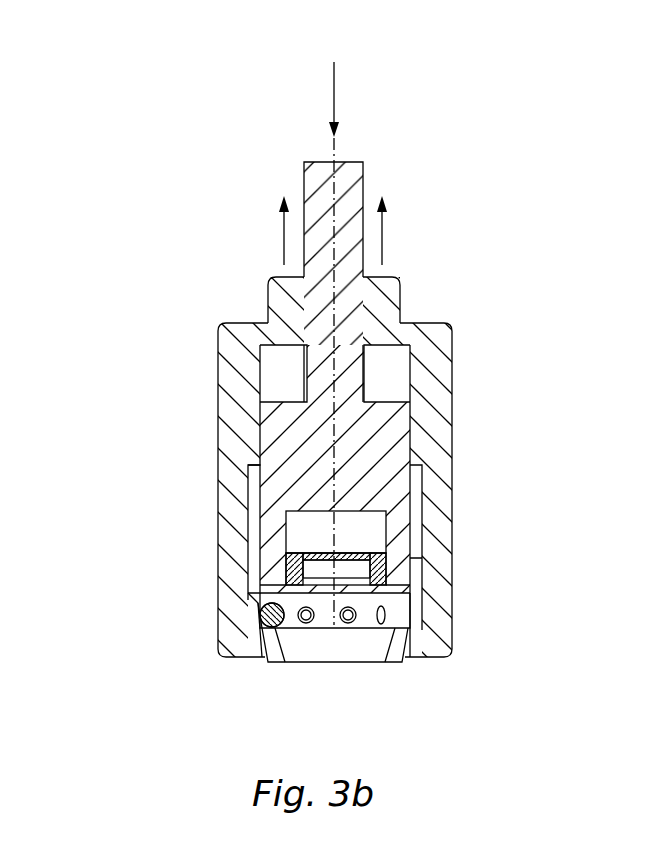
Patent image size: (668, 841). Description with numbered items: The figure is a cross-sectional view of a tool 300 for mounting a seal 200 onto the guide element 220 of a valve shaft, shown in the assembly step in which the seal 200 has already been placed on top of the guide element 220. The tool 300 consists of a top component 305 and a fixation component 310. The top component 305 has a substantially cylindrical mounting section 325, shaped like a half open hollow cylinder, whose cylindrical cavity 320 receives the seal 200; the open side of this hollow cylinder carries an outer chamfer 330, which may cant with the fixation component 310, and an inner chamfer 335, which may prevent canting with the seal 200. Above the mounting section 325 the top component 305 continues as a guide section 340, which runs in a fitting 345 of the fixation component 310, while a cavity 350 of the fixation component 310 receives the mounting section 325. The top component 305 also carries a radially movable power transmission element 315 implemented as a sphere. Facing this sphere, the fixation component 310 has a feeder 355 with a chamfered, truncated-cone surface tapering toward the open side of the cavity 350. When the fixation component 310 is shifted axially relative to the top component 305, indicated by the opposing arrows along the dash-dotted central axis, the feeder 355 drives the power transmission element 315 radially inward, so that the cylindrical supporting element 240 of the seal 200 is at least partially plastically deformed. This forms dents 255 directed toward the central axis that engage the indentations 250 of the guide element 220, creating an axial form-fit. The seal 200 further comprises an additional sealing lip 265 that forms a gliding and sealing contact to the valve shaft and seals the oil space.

The tool 300 is at (136, 124).
The top component 305 is at (363, 183).
The guide section 340 is at (353, 252).
The fitting 345 is at (387, 307).
The cavity 350 is at (277, 368).
The mounting section 325 is at (385, 445).
The fixation component 310 is at (452, 432).
The additional sealing lip 265 is at (243, 492).
The feeder 355 is at (260, 600).
The power transmission element 315 is at (257, 605).
The cylindrical cavity 320 is at (356, 528).
The seal 200 is at (357, 556).
The guide element 220 is at (387, 593).
The supporting element 240 is at (387, 589).
The dents 255 is at (285, 658).
The indentations 250 is at (347, 628).
The inner chamfer 335 is at (388, 660).
The outer chamfer 330 is at (410, 650).